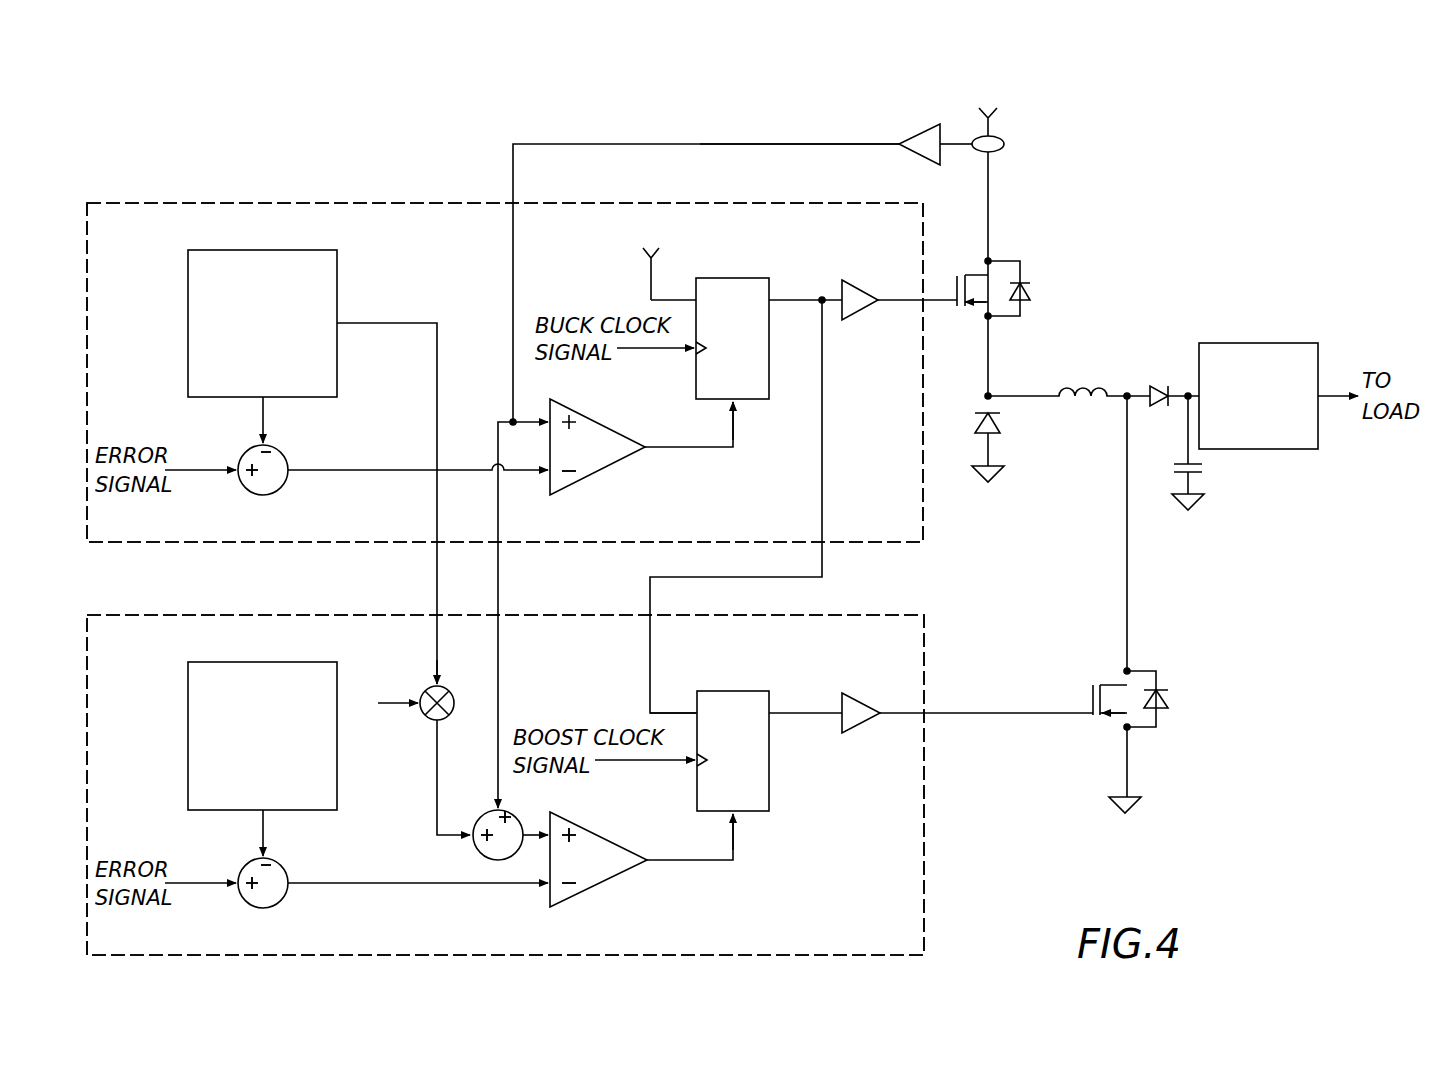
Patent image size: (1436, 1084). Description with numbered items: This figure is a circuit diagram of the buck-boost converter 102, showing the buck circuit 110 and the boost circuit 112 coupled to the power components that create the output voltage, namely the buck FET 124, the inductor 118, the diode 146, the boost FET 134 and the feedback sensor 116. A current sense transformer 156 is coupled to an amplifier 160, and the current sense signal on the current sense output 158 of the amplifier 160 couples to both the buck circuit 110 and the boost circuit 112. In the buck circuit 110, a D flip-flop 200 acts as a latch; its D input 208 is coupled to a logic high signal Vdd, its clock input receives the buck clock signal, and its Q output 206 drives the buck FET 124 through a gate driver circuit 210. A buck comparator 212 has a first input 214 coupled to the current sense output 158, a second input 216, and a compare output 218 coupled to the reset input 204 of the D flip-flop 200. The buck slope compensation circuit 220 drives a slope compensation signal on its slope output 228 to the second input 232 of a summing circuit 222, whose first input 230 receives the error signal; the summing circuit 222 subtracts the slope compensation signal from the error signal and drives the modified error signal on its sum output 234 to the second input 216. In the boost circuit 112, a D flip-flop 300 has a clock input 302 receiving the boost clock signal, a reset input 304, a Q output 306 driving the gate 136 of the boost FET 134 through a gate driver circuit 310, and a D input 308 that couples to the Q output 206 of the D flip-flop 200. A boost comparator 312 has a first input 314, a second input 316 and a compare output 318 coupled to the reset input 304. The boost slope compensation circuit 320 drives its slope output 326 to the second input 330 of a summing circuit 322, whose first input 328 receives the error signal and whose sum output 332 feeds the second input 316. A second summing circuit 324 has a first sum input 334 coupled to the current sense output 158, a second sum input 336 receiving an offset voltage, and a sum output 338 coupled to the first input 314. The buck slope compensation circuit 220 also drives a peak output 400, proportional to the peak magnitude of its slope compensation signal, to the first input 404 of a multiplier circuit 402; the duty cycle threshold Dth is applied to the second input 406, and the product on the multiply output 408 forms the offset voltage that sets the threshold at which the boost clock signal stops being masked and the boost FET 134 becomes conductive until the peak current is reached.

The buck-boost converter 102 is at (188, 101).
The buck circuit 110 is at (145, 239).
The boost circuit 112 is at (145, 651).
The feedback sensor 116 is at (1257, 343).
The inductor 118 is at (1094, 377).
The buck FET 124 is at (1022, 245).
The boost FET 134 is at (1180, 677).
The gate 136 is at (1091, 711).
The diode 146 is at (1164, 377).
The current sense transformer 156 is at (1022, 136).
The current sense output 158 is at (899, 142).
The amplifier 160 is at (942, 130).
The D flip-flop 200 is at (735, 278).
The reset input 204 is at (742, 401).
The Q output 206 is at (776, 300).
The D input 208 is at (697, 300).
The gate driver circuit 210 is at (845, 280).
The buck comparator 212 is at (608, 468).
The first input 214 is at (550, 418).
The second input 216 is at (552, 492).
The compare output 218 is at (645, 445).
The buck slope compensation circuit 220 is at (338, 285).
The summing circuit 222 is at (288, 465).
The slope output 228 is at (260, 404).
The first input 230 is at (240, 481).
The second input 232 is at (262, 448).
The sum output 234 is at (288, 484).
The D flip-flop 300 is at (735, 691).
The clock input 302 is at (696, 351).
The reset input 304 is at (742, 813).
The Q output 306 is at (775, 713).
The D input 308 is at (697, 713).
The gate driver circuit 310 is at (845, 693).
The boost comparator 312 is at (608, 880).
The first input 314 is at (550, 832).
The second input 316 is at (552, 905).
The compare output 318 is at (645, 858).
The boost slope compensation circuit 320 is at (302, 663).
The summing circuit 322 is at (288, 876).
The summing circuit 324 is at (479, 815).
The slope output 326 is at (258, 815).
The first input 328 is at (240, 893).
The second input 330 is at (262, 861).
The sum output 332 is at (290, 896).
The first sum input 334 is at (499, 808).
The second sum input 336 is at (477, 848).
The sum output 338 is at (527, 849).
The peak output 400 is at (341, 321).
The multiplier circuit 402 is at (461, 689).
The first input 404 is at (435, 683).
The second input 406 is at (420, 715).
The multiply output 408 is at (430, 716).